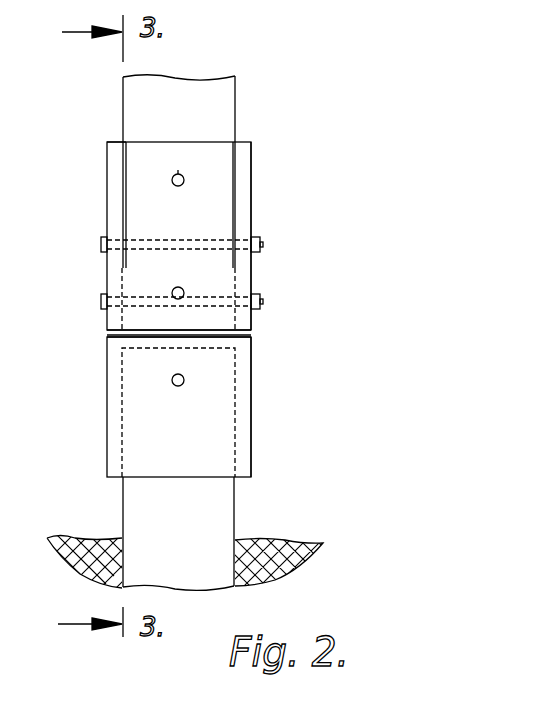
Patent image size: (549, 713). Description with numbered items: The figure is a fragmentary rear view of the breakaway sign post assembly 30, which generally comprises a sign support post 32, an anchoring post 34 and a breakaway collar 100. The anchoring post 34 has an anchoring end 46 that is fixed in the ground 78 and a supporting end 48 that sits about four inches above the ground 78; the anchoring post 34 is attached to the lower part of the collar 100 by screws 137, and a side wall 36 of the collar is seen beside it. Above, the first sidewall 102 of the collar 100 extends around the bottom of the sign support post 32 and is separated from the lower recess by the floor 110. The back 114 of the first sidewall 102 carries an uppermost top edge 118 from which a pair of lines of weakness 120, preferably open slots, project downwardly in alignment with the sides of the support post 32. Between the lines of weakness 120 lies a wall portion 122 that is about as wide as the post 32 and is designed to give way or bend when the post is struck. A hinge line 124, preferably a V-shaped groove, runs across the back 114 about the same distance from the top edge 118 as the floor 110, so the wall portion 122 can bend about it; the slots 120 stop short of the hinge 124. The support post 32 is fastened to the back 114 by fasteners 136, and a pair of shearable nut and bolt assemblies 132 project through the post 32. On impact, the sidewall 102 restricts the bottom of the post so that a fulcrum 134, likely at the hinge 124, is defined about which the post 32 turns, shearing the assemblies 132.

The breakaway sign post assembly 30 is at (260, 52).
The sign support post 32 is at (230, 110).
The anchoring post 34 is at (227, 498).
The lower bracket side wall 36 is at (243, 400).
The anchoring end 46 is at (173, 570).
The supporting end 48 is at (225, 345).
The ground 78 is at (288, 538).
The breakaway collar 100 is at (112, 420).
The first sidewall 102 is at (243, 202).
The floor 110 is at (148, 342).
The back 114 is at (178, 293).
The uppermost top edge 118 is at (112, 142).
The lines of weakness 120 is at (233, 163).
The wall portion 122 is at (147, 220).
The hinge line 124 is at (112, 332).
The shearable nut and bolt assemblies 132 is at (262, 297).
The fulcrum 134 is at (245, 330).
The fasteners 136 is at (179, 174).
The screws 137 is at (180, 387).